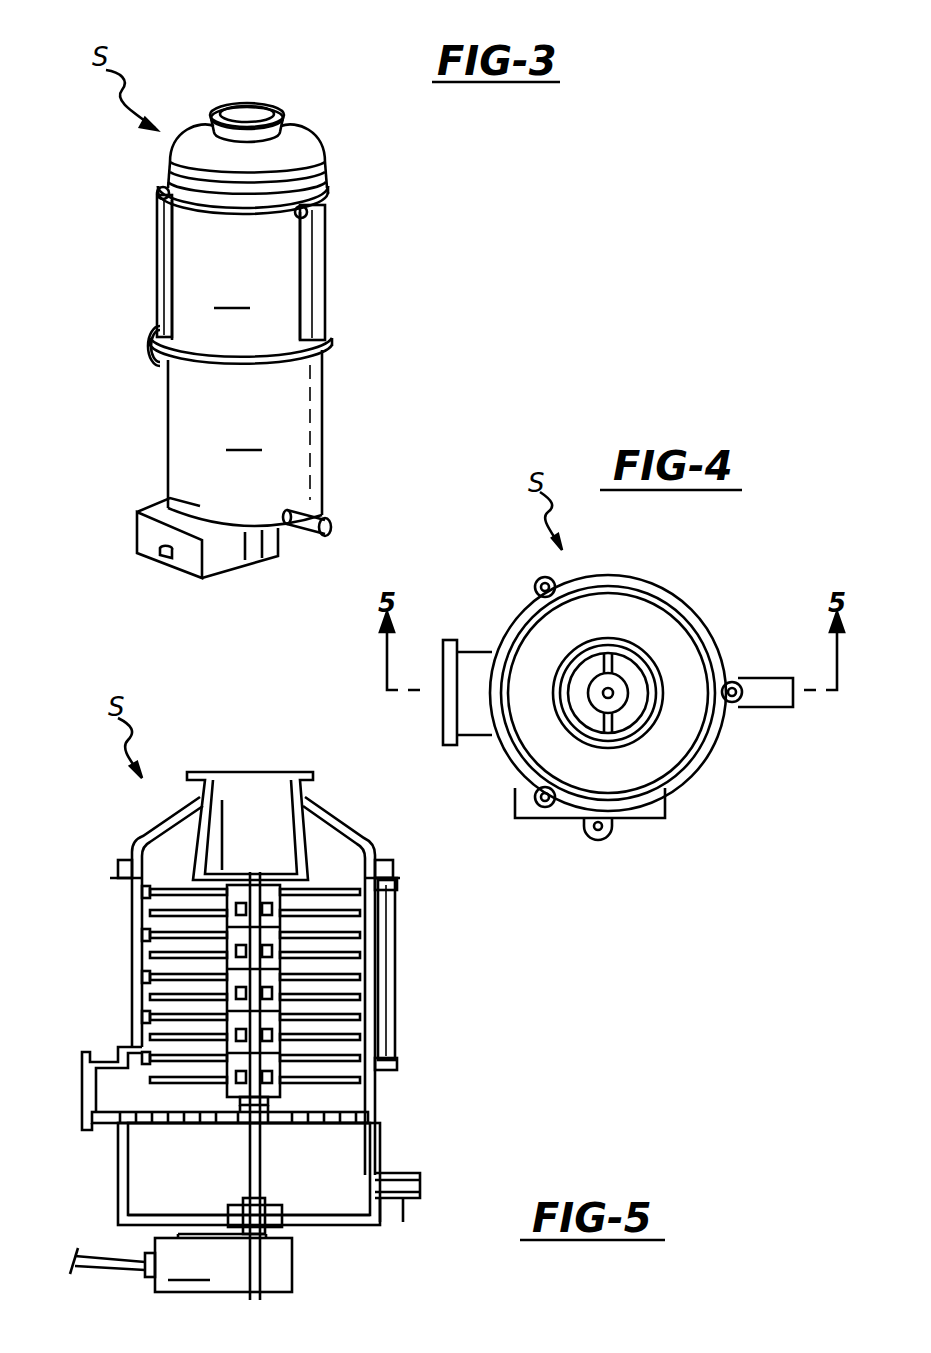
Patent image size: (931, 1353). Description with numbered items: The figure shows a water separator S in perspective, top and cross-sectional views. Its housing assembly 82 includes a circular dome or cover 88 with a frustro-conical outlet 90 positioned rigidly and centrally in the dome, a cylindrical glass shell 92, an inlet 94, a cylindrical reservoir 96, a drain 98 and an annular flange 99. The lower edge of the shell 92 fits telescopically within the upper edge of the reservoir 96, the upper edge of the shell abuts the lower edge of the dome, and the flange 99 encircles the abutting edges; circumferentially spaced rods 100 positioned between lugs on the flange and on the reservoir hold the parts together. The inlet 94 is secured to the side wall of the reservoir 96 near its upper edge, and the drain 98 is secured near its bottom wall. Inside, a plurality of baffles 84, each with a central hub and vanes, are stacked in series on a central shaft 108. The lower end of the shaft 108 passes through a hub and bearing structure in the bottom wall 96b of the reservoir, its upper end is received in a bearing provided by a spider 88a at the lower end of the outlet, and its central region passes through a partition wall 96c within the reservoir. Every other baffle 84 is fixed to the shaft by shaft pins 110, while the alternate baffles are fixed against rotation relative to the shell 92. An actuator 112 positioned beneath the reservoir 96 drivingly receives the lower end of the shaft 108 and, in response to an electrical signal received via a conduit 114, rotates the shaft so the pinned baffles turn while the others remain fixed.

In FIG. 3, the housing assembly 82 is at (340, 260).
In FIG. 5, the housing assembly 82 is at (128, 945).
In FIG. 5, the baffles 84 is at (395, 890).
In FIG. 3, the dome 88 is at (297, 137).
In FIG. 4, the dome 88 is at (672, 750).
In FIG. 5, the dome 88 is at (338, 812).
In FIG. 5, the spider 88a is at (232, 865).
In FIG. 3, the frustro-conical outlet 90 is at (247, 103).
In FIG. 4, the frustro-conical outlet 90 is at (612, 668).
In FIG. 5, the frustro-conical outlet 90 is at (205, 780).
In FIG. 3, the cylindrical glass shell 92 is at (241, 282).
In FIG. 5, the cylindrical glass shell 92 is at (135, 1005).
In FIG. 3, the inlet 94 is at (148, 360).
In FIG. 4, the inlet 94 is at (478, 650).
In FIG. 5, the inlet 94 is at (85, 1120).
In FIG. 3, the cylindrical reservoir 96 is at (245, 438).
In FIG. 5, the cylindrical reservoir 96 is at (120, 1150).
In FIG. 5, the bottom wall 96b is at (187, 1192).
In FIG. 5, the partition wall 96c is at (325, 1120).
In FIG. 3, the drain 98 is at (333, 522).
In FIG. 4, the drain 98 is at (775, 678).
In FIG. 5, the drain 98 is at (400, 1200).
In FIG. 3, the annular flange 99 is at (325, 188).
In FIG. 4, the annular flange 99 is at (498, 742).
In FIG. 5, the annular flange 99 is at (130, 866).
In FIG. 3, the rods 100 is at (157, 250).
In FIG. 5, the rods 100 is at (398, 962).
In FIG. 5, the central shaft 108 is at (262, 870).
In FIG. 5, the shaft pins 110 is at (265, 1000).
In FIG. 3, the actuator 112 is at (140, 530).
In FIG. 5, the actuator 112 is at (218, 1263).
In FIG. 5, the conduit 114 is at (80, 1254).